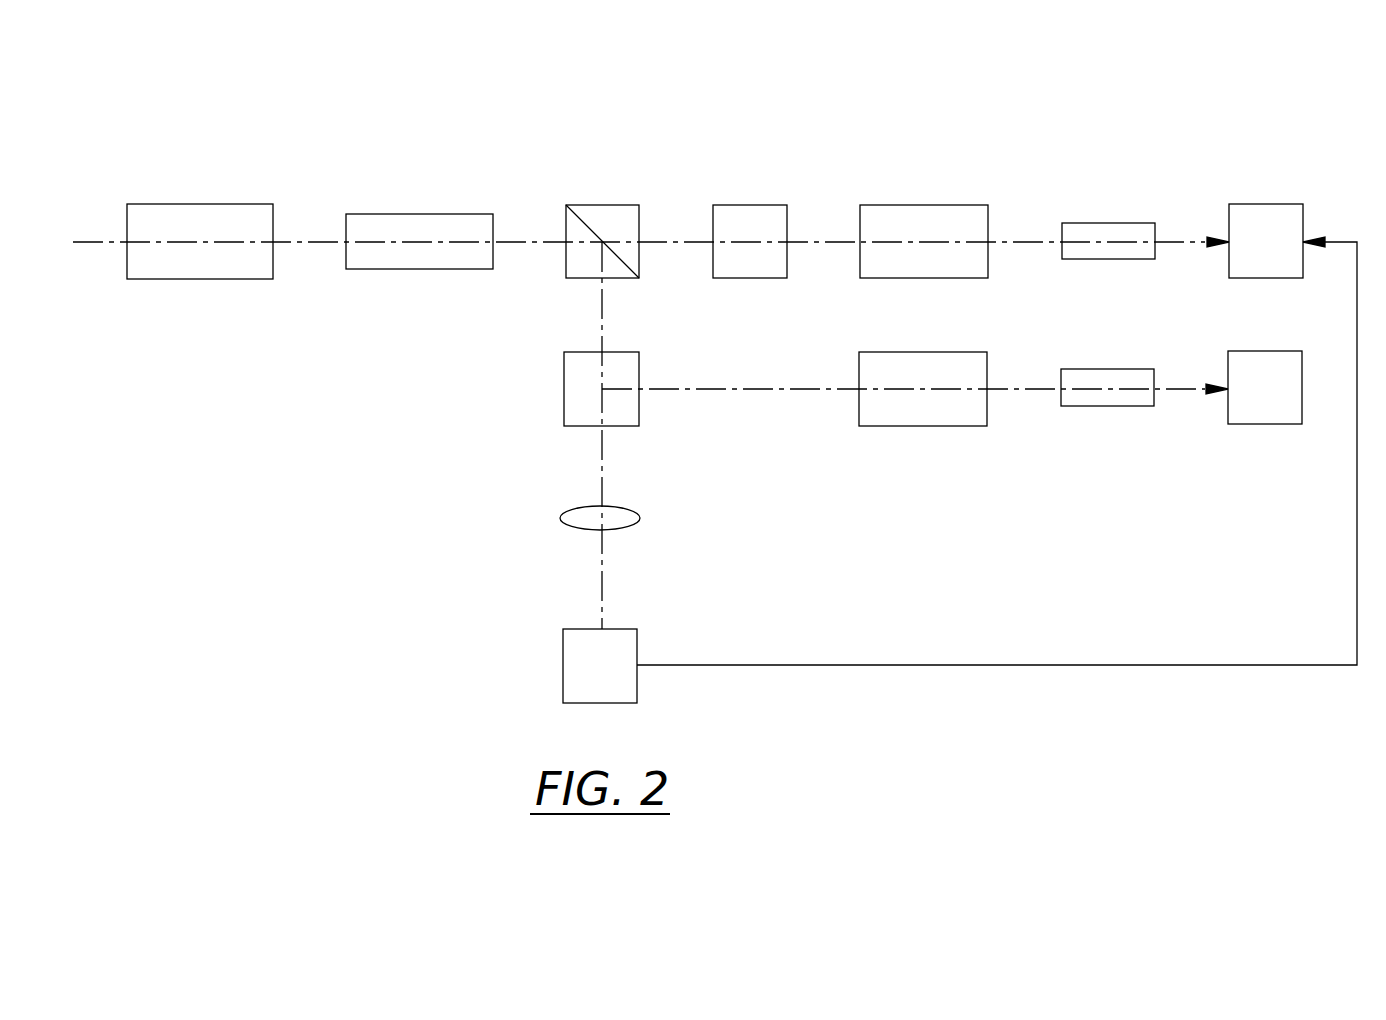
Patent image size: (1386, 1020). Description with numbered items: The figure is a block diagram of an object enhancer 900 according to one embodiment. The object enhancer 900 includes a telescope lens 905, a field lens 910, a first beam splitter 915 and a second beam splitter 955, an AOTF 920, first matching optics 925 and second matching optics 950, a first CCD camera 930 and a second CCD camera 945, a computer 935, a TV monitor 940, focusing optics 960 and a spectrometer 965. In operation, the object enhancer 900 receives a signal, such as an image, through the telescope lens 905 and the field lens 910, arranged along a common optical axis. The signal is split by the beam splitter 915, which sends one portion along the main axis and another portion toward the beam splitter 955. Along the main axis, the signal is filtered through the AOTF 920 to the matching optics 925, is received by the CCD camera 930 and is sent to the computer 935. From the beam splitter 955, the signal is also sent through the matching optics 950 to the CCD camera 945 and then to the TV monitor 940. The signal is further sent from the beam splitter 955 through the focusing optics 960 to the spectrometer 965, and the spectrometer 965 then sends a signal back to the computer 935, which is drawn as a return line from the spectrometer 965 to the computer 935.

The object enhancer 900 is at (788, 72).
The telescope lens 905 is at (175, 204).
The field lens 910 is at (415, 214).
The beam splitter 915 is at (614, 205).
The AOTF 920 is at (758, 205).
The matching optics 925 is at (947, 205).
The CCD camera 930 is at (1117, 223).
The computer 935 is at (1282, 204).
The TV monitor 940 is at (1280, 424).
The CCD camera 945 is at (1127, 406).
The matching optics 950 is at (950, 426).
The beam splitter 955 is at (564, 364).
The focusing optics 960 is at (560, 518).
The spectrometer 965 is at (563, 660).